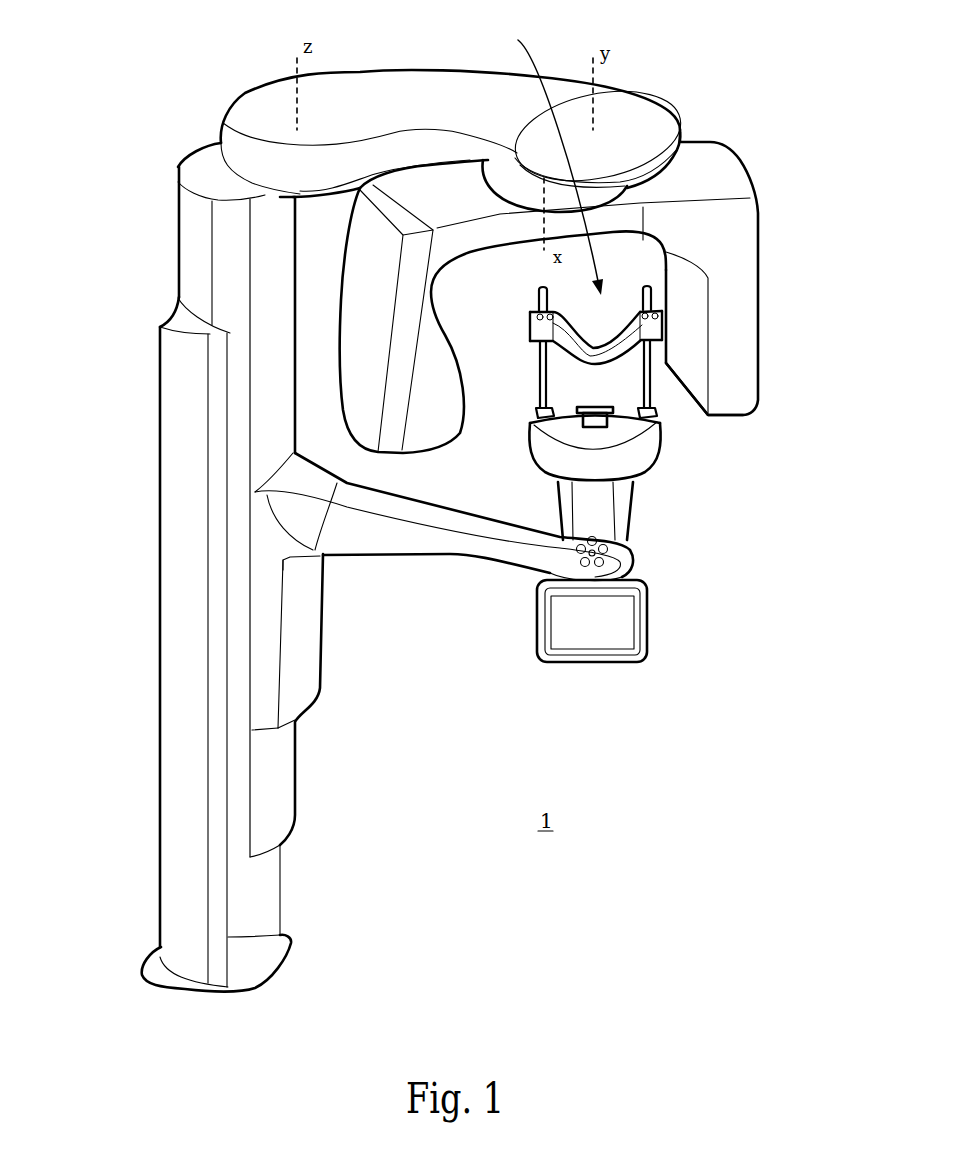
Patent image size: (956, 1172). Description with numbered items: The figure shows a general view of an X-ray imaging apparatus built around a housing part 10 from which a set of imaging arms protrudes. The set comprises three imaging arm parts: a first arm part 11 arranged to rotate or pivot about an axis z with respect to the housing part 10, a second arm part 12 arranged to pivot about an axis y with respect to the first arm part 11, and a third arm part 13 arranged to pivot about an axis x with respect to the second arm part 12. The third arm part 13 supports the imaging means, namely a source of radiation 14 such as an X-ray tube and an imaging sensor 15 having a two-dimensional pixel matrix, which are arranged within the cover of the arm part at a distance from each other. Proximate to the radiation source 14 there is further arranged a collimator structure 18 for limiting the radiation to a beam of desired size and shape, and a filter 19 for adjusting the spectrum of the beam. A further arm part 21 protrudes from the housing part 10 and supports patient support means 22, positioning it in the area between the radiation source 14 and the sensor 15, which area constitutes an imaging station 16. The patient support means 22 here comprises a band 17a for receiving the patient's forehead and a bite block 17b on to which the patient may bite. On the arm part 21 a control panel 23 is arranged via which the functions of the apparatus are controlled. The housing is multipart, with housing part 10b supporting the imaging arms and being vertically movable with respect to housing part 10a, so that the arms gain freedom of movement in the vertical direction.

The housing part 10 is at (148, 532).
The housing part 10a is at (170, 677).
The housing part 10b is at (190, 272).
The first arm part 11 is at (427, 83).
The second arm part 12 is at (622, 188).
The third arm part 13 is at (731, 184).
The source of radiation 14 is at (442, 402).
The imaging sensor 15 is at (727, 385).
The imaging station 16 is at (549, 154).
The band 17a is at (532, 328).
The bite block 17b is at (545, 333).
The collimator structure 18 is at (555, 318).
The filter 19 is at (503, 306).
The second arm part 21 is at (350, 530).
The patient support means 22 is at (673, 473).
The control panel 23 is at (642, 615).